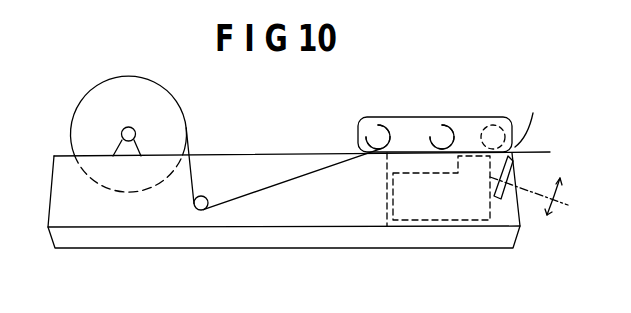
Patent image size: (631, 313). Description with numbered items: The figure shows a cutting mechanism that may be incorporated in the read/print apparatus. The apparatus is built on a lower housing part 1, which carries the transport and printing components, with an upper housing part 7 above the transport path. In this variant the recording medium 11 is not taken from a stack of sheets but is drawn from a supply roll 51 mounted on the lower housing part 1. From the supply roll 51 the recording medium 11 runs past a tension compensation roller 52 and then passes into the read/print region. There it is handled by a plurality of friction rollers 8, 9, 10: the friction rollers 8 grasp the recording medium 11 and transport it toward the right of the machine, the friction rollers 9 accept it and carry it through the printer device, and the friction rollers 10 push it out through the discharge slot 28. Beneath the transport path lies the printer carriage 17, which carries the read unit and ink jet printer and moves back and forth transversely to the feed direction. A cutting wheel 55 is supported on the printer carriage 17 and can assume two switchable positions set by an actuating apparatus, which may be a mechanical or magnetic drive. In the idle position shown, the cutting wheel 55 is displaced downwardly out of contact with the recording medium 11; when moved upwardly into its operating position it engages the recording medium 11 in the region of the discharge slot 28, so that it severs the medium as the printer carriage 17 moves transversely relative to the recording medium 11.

The lower housing part 1 is at (65, 198).
The supply roll 51 is at (93, 113).
The tension compensation roller 52 is at (199, 210).
The recording medium 11 is at (281, 183).
The upper housing part 7 is at (395, 126).
The friction rollers 8 is at (366, 121).
The friction rollers 9 is at (441, 126).
The friction rollers 10 is at (494, 126).
The discharge slot 28 is at (530, 114).
The printer carriage 17 is at (460, 205).
The cutting wheel 55 is at (512, 172).